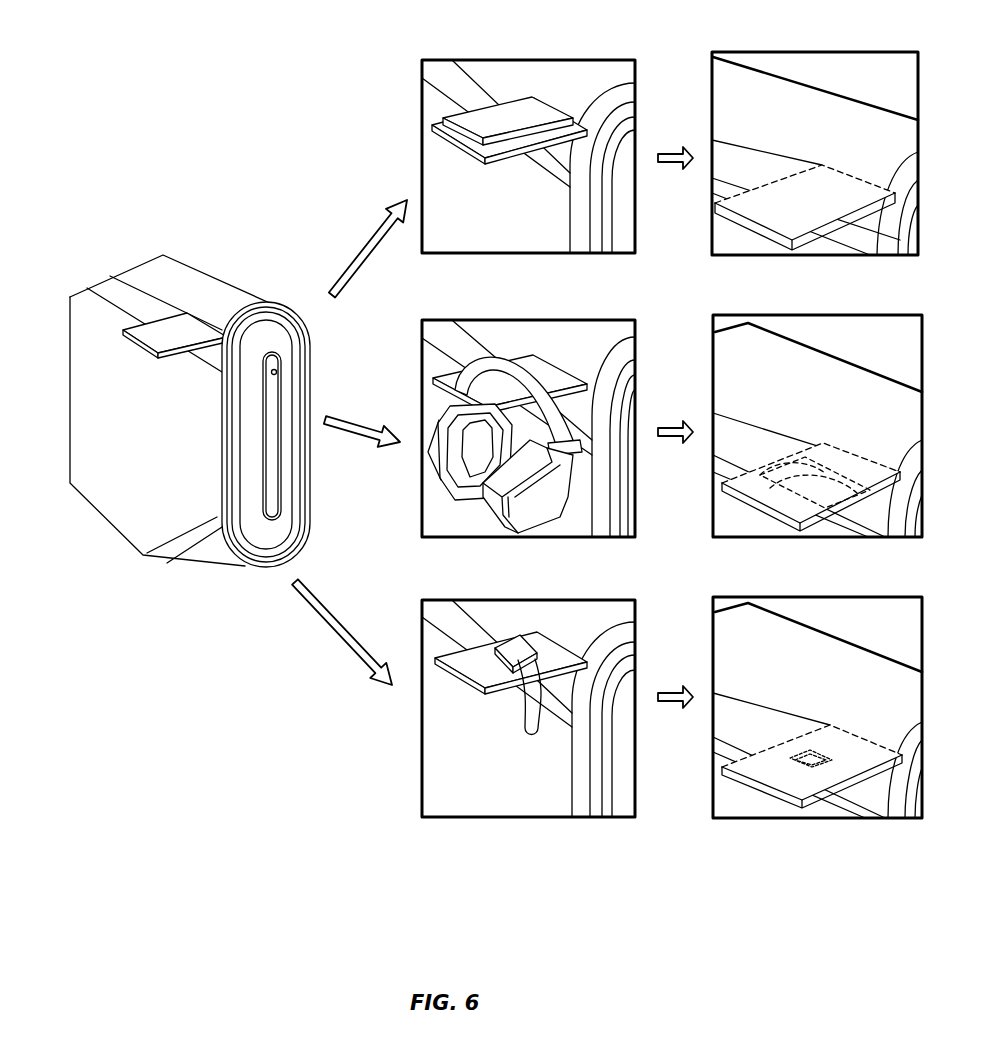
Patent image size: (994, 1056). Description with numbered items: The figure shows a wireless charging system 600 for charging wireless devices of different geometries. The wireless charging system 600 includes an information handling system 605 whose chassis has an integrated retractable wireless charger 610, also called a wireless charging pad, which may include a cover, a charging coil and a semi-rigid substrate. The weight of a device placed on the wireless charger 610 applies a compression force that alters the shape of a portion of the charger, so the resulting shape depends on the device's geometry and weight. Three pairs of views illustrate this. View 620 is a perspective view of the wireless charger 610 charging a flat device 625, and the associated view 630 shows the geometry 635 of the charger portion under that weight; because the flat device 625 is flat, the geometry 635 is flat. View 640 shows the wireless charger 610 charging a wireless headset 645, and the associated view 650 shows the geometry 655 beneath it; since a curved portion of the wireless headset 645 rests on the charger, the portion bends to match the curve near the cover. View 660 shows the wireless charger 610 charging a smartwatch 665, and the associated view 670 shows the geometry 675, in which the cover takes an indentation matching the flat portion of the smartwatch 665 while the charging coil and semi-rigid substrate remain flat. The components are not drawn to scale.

The wireless charging system 600 is at (213, 86).
The information handling system 605 is at (213, 275).
The retractable wireless charger 610 is at (123, 332).
The view 620 is at (477, 60).
The flat device 625 is at (507, 125).
The view 630 is at (788, 52).
The geometry 635 is at (793, 198).
The view 640 is at (498, 320).
The wireless headset 645 is at (533, 372).
The view 650 is at (785, 315).
The geometry 655 is at (820, 455).
The view 660 is at (523, 600).
The smartwatch 665 is at (518, 650).
The view 670 is at (793, 597).
The geometry 675 is at (825, 742).